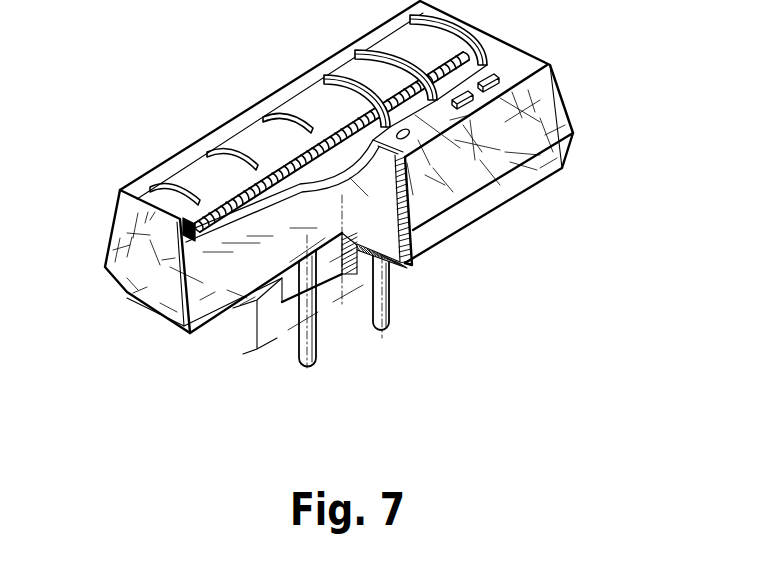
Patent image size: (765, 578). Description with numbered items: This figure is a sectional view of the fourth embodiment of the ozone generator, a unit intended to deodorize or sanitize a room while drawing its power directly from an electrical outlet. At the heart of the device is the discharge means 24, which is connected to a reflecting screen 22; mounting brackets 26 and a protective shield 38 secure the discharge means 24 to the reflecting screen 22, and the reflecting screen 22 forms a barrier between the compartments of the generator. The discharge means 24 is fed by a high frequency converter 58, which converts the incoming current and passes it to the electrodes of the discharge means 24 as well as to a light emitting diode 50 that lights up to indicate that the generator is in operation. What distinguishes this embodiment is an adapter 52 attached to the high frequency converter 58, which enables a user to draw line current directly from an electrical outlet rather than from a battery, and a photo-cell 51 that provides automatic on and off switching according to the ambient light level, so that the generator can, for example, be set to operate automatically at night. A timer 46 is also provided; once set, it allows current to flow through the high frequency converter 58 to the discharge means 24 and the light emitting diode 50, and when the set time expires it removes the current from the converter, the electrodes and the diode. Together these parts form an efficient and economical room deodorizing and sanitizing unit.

The reflecting screen 22 is at (243, 198).
The discharge means 24 is at (177, 182).
The mounting brackets 26 is at (185, 237).
The protective shield 38 is at (233, 147).
The timer 46 is at (530, 198).
The light emitting diode 50 is at (473, 99).
The photo-cell 51 is at (410, 142).
The adapter 52 is at (381, 330).
The high frequency converter 58 is at (245, 326).